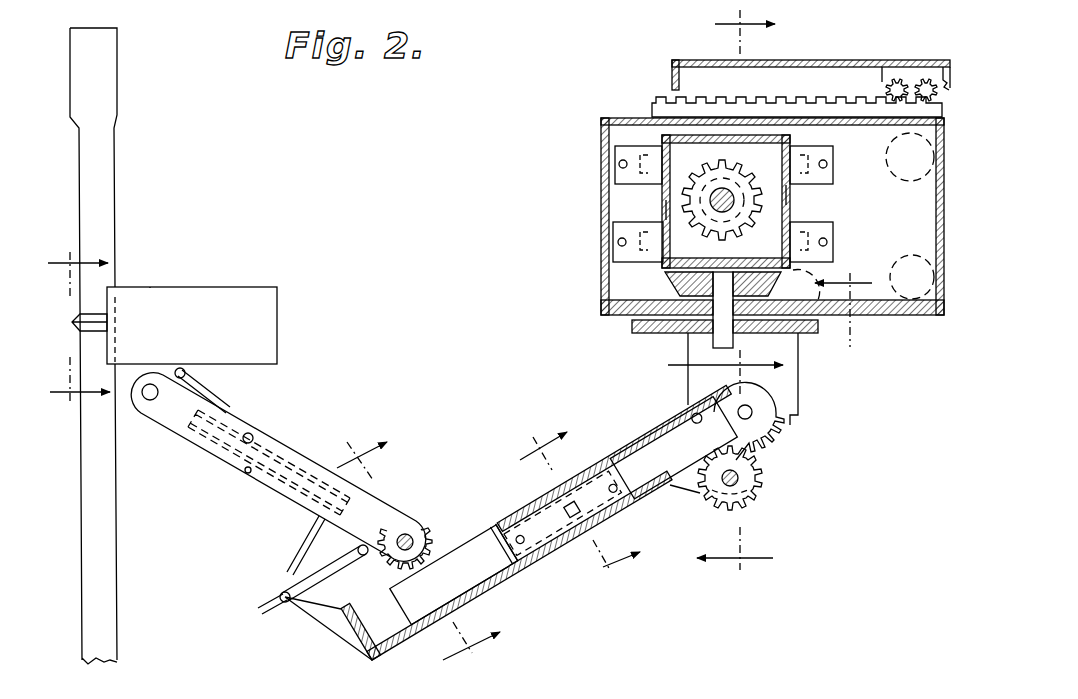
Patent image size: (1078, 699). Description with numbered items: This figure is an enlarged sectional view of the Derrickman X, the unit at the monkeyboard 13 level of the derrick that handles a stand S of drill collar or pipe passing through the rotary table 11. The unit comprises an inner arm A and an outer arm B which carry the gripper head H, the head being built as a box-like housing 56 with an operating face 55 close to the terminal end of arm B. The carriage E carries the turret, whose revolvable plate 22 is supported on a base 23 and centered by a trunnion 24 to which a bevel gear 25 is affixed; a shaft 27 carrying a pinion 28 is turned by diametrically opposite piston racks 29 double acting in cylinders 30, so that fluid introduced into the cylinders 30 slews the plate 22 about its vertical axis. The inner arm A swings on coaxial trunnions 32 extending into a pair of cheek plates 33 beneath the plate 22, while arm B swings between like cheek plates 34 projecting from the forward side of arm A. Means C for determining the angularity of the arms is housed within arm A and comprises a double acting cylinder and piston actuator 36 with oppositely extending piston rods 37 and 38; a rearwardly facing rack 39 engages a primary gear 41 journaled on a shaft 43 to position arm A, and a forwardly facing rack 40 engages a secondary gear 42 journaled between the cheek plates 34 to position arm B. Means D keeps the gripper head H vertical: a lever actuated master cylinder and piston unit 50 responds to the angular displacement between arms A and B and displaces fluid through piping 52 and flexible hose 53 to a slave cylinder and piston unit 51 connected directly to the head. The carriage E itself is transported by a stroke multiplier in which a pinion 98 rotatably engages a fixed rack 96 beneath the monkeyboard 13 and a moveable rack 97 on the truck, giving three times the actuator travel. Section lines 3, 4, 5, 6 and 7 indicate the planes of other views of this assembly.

The stand S is at (97, 157).
The gripper head H is at (215, 325).
The box-like housing 56 is at (181, 300).
The operating face 55 is at (82, 333).
The rotary table 11 is at (69, 331).
The means that maintains vertical disposition of the gripper head D is at (243, 410).
The slave cylinder and piston unit 51 is at (217, 407).
The outer arm B is at (210, 457).
The piping 52 is at (247, 472).
The flexible hose 53 is at (190, 432).
The master cylinder and piston unit 50 is at (292, 573).
The inner arm A is at (547, 519).
The double acting cylinder and piston actuator 36 is at (519, 565).
The rack 40 is at (432, 589).
The cheek plates 34 is at (614, 458).
The piston rod 38 is at (503, 544).
The means that actuates and determines angular displacement of the arms C is at (673, 448).
The rack 39 is at (697, 418).
The piston rod 37 is at (647, 480).
The secondary gear 42 is at (423, 515).
The section line 5 is at (406, 556).
The section line 6 is at (569, 519).
The pivot block 7 is at (781, 396).
The cheek plates 33 is at (787, 380).
The trunnions 32 is at (790, 420).
The primary gear 41 is at (757, 480).
The shaft 43 is at (740, 478).
The section line 3 is at (710, 202).
The section line 4 is at (786, 422).
The Derrickman X is at (718, 195).
The carriage E is at (727, 231).
The base 23 is at (860, 318).
The monkeyboard 13 is at (833, 58).
The moveable rack section 97 is at (780, 102).
The drive pinion 98 is at (887, 88).
The fixed rack section 96 is at (902, 72).
The pinion 28 is at (795, 216).
The piston racks 29 is at (670, 212).
The cylinders 30 is at (630, 215).
The shaft 27 is at (722, 200).
The gear 25 is at (655, 272).
The trunnion 24 is at (705, 337).
The revolvable plate 22 is at (640, 326).